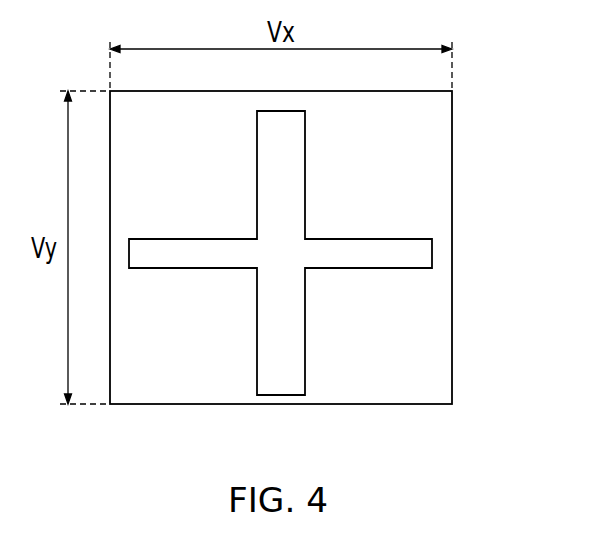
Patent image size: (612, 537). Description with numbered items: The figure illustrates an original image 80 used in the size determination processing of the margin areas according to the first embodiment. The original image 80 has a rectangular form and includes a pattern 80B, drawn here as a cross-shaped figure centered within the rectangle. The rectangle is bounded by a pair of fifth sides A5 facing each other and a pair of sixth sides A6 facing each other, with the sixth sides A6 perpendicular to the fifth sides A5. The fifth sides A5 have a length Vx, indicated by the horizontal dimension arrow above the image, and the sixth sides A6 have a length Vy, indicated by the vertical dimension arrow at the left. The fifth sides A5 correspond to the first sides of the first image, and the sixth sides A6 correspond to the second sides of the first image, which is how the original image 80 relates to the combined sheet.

The original image 80 is at (453, 184).
The pattern 80B is at (410, 268).
The fifth sides A5 is at (400, 91).
The sixth sides A6 is at (110, 362).